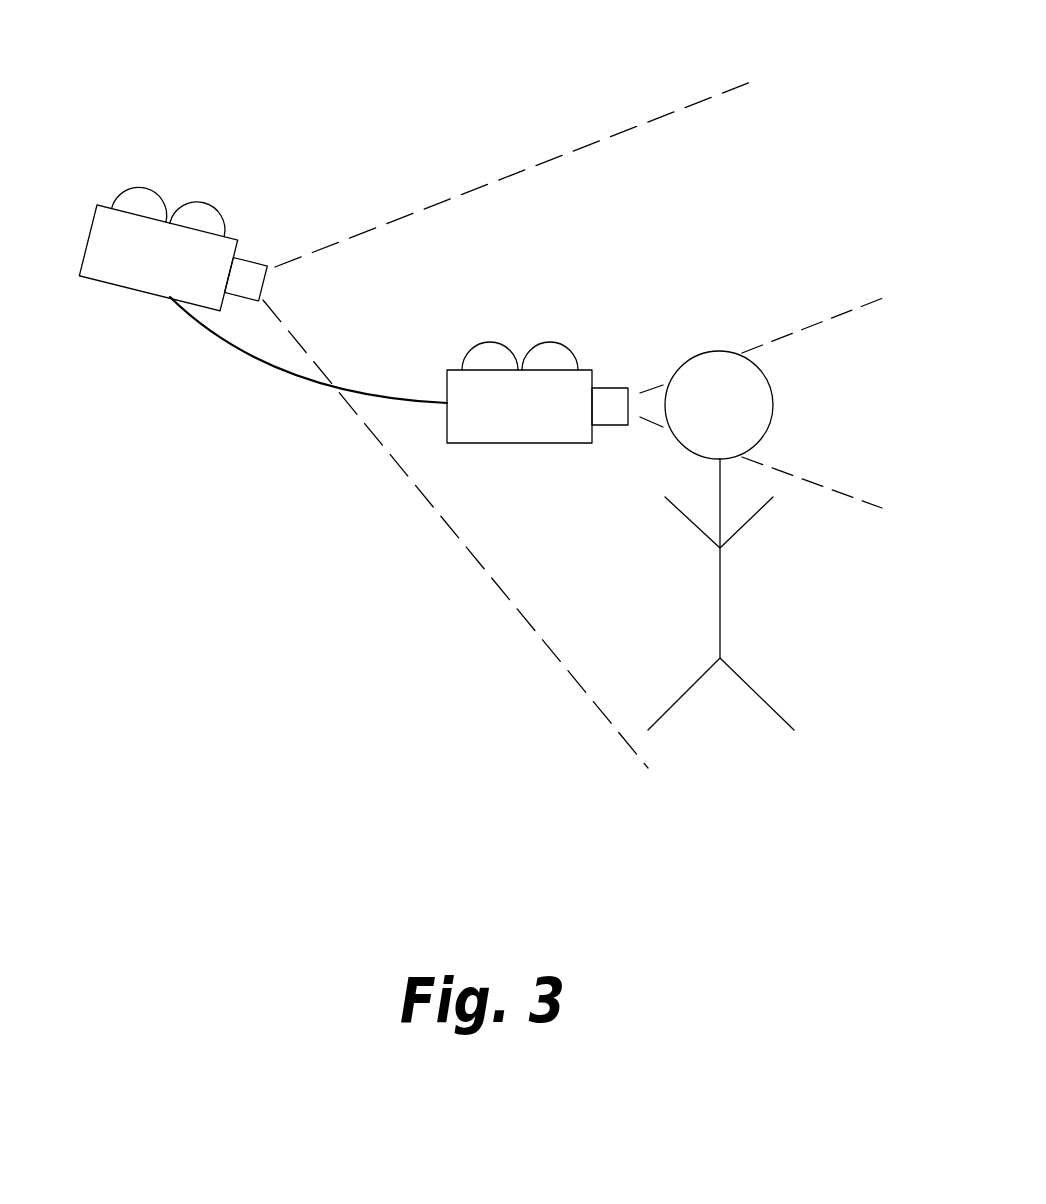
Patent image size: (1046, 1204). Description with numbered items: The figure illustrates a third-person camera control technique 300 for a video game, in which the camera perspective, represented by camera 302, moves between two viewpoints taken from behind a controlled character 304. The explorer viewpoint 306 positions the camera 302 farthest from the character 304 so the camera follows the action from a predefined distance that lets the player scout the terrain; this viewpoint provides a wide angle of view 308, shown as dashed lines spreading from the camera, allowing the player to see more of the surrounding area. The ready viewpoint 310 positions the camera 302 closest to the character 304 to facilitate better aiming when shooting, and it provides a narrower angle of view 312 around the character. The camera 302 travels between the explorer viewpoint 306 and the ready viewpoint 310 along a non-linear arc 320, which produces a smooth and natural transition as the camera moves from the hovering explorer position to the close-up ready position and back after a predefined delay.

The third-person camera control technique 300 is at (342, 35).
The camera 302 is at (145, 188).
The controlled character 304 is at (718, 350).
The explorer viewpoint 306 is at (137, 386).
The wide angle of view 308 is at (472, 192).
The ready viewpoint 310 is at (552, 547).
The narrower angle of view 312 is at (840, 313).
The non-linear arc 320 is at (293, 378).